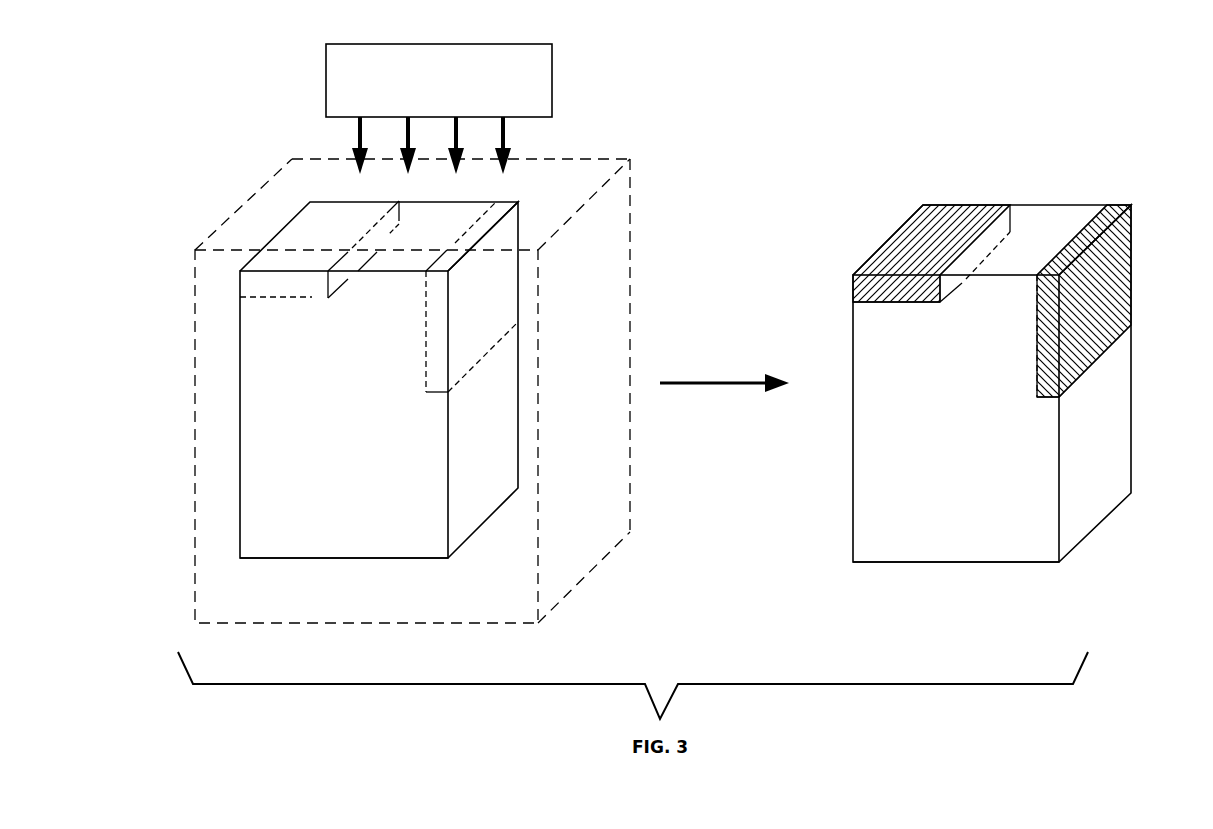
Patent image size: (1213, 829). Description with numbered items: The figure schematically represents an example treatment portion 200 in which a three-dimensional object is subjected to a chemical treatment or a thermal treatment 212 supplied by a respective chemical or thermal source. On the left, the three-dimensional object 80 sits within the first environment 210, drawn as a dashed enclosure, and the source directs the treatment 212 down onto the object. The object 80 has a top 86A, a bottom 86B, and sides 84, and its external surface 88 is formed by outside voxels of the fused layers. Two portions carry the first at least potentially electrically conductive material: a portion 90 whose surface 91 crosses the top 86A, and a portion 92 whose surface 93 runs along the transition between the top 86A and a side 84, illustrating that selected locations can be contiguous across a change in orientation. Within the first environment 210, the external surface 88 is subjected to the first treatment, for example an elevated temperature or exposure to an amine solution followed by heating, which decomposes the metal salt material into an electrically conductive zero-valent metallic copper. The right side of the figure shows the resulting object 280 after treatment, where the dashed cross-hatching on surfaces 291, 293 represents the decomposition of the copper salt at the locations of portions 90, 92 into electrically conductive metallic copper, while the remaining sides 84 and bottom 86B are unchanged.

The treatment portion 200 is at (238, 57).
The chemical or thermal treatment 212 is at (552, 82).
The first environment 210 is at (250, 188).
The 3D object 80 is at (266, 432).
The treated substrate block 280 is at (882, 432).
The top 86A is at (440, 214).
The bottom 86B is at (370, 558).
The sides 84 is at (769, 382).
The external surface 88 is at (276, 381).
The surface of portion 92 93 is at (488, 301).
The surface of portion 90 91 is at (318, 231).
The portion 90 is at (276, 298).
The portion 92 is at (419, 348).
The surface 291 is at (940, 222).
The surface 293 is at (1102, 287).